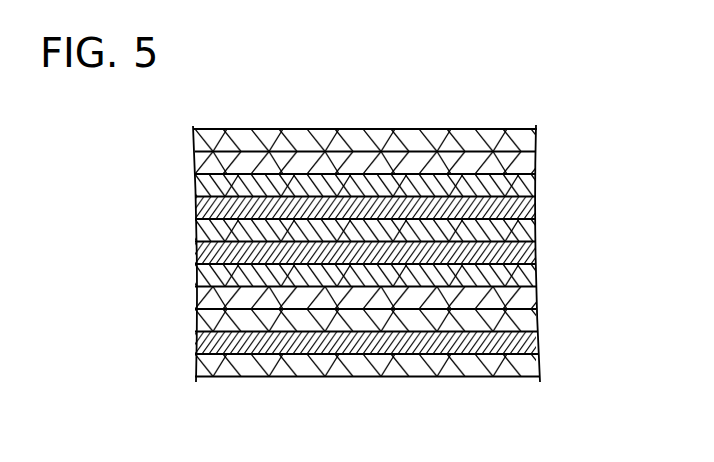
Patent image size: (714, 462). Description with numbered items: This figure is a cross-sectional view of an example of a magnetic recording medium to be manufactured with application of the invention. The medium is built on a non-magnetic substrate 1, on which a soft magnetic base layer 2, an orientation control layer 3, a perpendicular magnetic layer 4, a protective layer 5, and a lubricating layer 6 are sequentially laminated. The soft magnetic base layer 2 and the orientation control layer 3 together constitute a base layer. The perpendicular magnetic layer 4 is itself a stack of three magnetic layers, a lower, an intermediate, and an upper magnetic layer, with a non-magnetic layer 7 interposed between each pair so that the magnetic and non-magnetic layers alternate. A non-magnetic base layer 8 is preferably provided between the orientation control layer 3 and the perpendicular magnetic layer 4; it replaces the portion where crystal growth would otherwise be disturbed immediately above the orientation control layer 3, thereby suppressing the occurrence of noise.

The non-magnetic substrate 1 is at (523, 365).
The soft magnetic base layer 2 is at (522, 342).
The orientation control layer 3 is at (522, 320).
The perpendicular magnetic layer 4 is at (522, 183).
The protective layer 5 is at (522, 160).
The lubricating layer 6 is at (522, 139).
The non-magnetic layer 7 is at (522, 208).
The non-magnetic base layer 8 is at (522, 299).